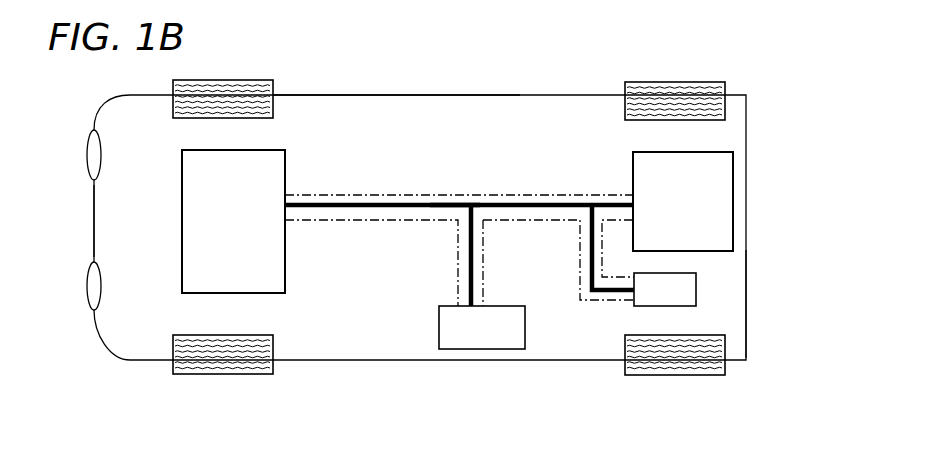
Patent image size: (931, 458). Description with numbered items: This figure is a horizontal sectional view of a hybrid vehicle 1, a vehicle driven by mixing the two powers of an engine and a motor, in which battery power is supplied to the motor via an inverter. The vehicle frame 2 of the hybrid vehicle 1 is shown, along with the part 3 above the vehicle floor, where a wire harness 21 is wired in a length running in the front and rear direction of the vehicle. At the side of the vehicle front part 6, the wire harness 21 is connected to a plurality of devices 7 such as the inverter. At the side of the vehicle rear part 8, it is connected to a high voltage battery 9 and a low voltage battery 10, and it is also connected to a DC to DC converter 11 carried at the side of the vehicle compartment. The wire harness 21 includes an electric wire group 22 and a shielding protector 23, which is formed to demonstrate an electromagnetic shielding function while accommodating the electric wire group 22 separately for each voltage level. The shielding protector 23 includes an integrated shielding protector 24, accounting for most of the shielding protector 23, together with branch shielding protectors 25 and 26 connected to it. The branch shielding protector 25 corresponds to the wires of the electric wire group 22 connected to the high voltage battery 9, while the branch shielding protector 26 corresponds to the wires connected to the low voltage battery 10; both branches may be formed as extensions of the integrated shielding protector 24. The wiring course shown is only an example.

The hybrid vehicle 1 is at (773, 138).
The vehicle frame 2 is at (428, 123).
The part above vehicle floor 3 is at (320, 123).
The vehicle front part 6 is at (120, 236).
The devices 7 is at (190, 272).
The vehicle rear part 8 is at (723, 308).
The high voltage battery 9 is at (710, 182).
The low voltage battery 10 is at (675, 290).
The DC to DC converter 11 is at (473, 335).
The wire harness 21 is at (530, 196).
The electric wire group 22 is at (437, 204).
The shielding protector 23 is at (352, 221).
The integrated shielding protector 24 is at (350, 195).
The branch shielding protector 25 is at (622, 195).
The branch shielding protector 26 is at (600, 303).